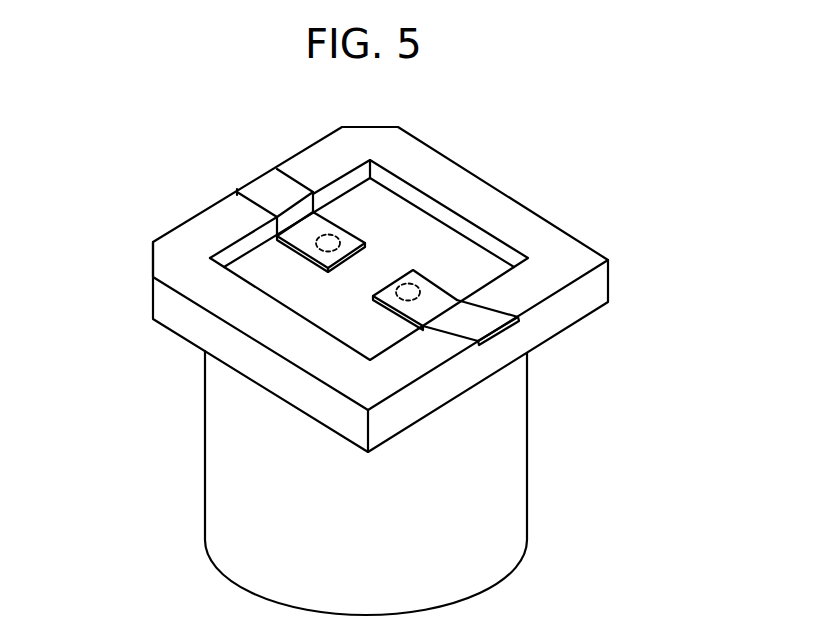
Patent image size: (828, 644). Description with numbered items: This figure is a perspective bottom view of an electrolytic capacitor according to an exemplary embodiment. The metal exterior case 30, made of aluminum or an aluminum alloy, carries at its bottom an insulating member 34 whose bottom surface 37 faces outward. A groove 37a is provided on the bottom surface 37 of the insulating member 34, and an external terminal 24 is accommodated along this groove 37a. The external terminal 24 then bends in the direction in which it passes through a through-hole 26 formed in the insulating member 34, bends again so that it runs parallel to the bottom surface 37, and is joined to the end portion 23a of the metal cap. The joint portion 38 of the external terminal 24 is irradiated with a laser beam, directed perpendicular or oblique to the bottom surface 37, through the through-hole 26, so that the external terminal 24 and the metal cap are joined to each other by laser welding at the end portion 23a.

The external terminal 24 is at (268, 192).
The through-hole 26 is at (410, 217).
The exterior case 30 is at (232, 480).
The insulating member 34 is at (202, 335).
The bottom surface 37 is at (165, 270).
The groove 37a is at (512, 328).
The joint portion 38 is at (349, 176).
The end portion 23a is at (332, 238).